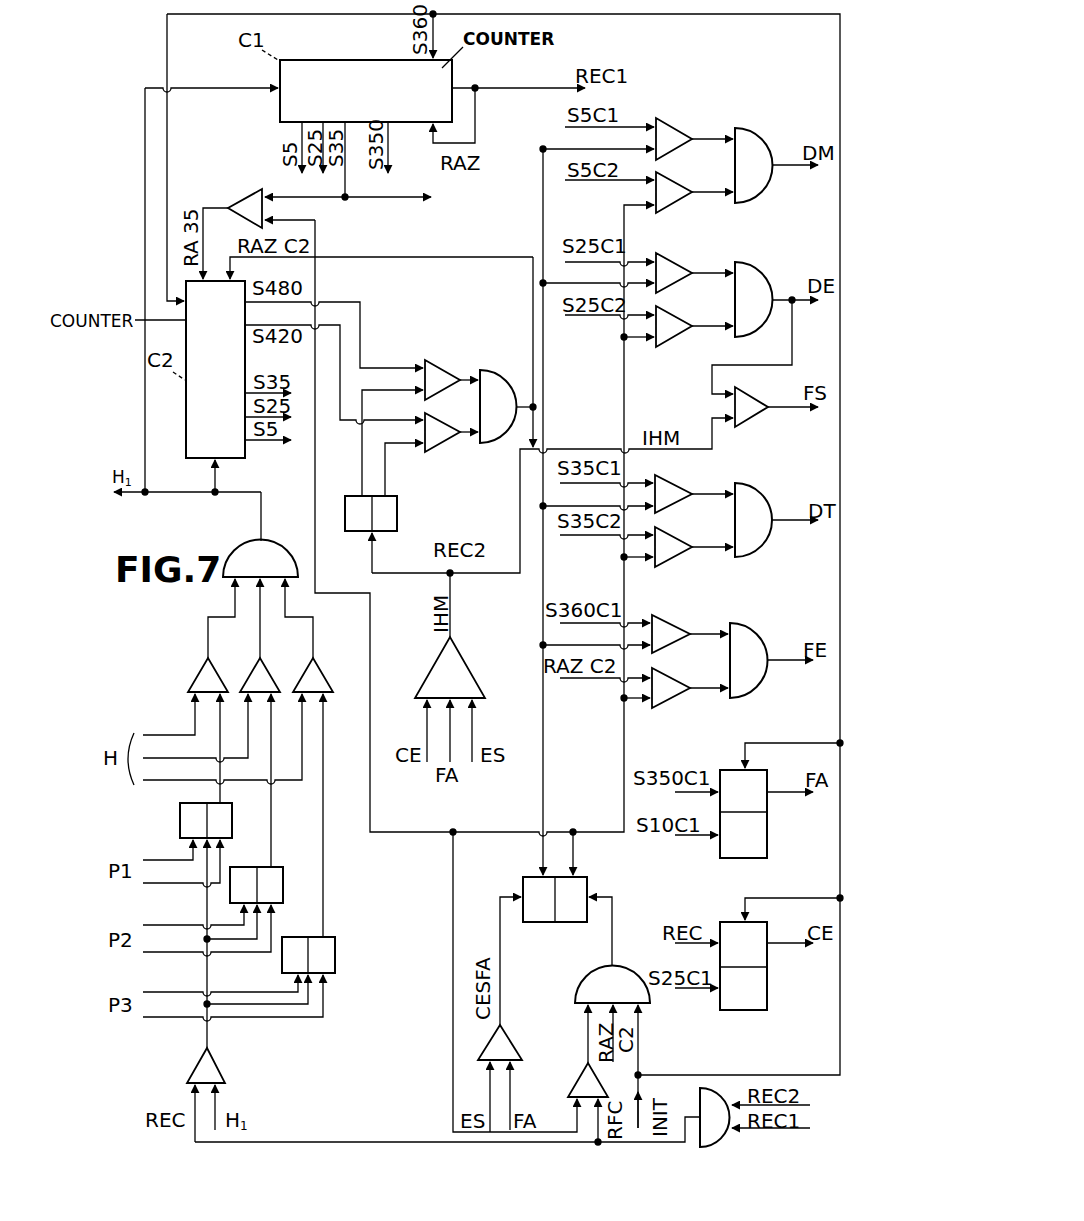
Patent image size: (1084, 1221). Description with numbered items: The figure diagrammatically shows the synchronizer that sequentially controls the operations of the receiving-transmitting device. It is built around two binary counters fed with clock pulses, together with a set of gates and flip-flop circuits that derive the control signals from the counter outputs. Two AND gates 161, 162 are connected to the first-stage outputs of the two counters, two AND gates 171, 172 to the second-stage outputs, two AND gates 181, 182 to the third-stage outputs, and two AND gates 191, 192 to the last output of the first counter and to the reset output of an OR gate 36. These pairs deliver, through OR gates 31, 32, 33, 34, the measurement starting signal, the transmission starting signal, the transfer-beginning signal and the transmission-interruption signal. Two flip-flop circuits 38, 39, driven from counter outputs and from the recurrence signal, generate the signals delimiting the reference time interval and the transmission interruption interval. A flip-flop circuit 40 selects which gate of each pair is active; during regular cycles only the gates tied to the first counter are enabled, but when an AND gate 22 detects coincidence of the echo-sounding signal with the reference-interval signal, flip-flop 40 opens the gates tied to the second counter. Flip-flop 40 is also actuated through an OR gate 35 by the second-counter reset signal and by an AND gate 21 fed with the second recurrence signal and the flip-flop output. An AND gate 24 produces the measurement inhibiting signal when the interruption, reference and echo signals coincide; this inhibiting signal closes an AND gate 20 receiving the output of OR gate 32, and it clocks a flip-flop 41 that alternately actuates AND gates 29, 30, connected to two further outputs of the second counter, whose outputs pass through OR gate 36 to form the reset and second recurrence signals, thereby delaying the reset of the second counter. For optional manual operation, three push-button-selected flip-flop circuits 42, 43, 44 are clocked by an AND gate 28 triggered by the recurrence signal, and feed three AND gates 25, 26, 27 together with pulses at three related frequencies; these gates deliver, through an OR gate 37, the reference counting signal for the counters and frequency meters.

The AND gate 20 is at (758, 414).
The AND gate 21 is at (581, 1072).
The AND gate 22 is at (513, 1033).
The AND gate 24 is at (431, 665).
The AND gate 25 is at (196, 671).
The AND gate 26 is at (251, 671).
The AND gate 27 is at (306, 671).
The AND gate 28 is at (216, 1058).
The AND gate 29 is at (436, 364).
The AND gate 30 is at (443, 449).
The OR gate 31 is at (742, 128).
The OR gate 32 is at (743, 262).
The OR gate 33 is at (240, 195).
The OR gate 34 is at (745, 623).
The OR gate 35 is at (575, 990).
The OR gate 36 is at (493, 370).
The OR gate 37 is at (228, 551).
The flip-flop circuit 38 is at (777, 854).
The flip-flop circuit 39 is at (784, 1009).
The flip-flop circuit 40 is at (545, 923).
The flip-flop 41 is at (410, 528).
The flip-flop circuit 42 is at (180, 820).
The flip-flop circuit 43 is at (282, 860).
The flip-flop circuit 44 is at (337, 937).
The AND gate 161 is at (669, 118).
The AND gate 162 is at (676, 205).
The AND gate 171 is at (690, 262).
The AND gate 172 is at (663, 348).
The AND gate 181 is at (681, 489).
The AND gate 182 is at (684, 556).
The AND gate 191 is at (687, 623).
The AND gate 192 is at (683, 697).